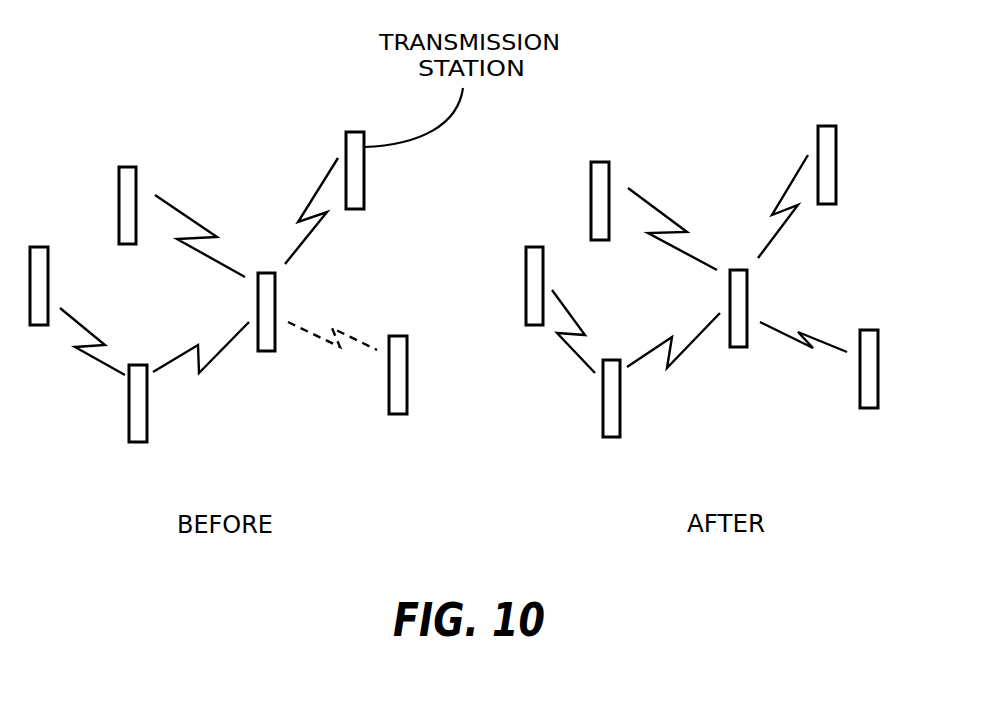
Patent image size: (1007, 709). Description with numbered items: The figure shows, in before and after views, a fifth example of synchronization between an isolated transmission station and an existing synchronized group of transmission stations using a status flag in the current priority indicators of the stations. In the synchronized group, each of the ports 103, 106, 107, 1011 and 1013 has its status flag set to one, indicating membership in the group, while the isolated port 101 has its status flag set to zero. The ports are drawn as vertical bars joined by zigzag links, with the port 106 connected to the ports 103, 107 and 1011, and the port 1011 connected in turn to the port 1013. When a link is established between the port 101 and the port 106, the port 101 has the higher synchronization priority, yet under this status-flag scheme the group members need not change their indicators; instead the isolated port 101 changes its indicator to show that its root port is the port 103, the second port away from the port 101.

The isolated port 101 is at (389, 398).
The root port 103 is at (136, 185).
The port 106 is at (276, 310).
The port 107 is at (346, 146).
The port 1011 is at (147, 417).
The port 1013 is at (120, 276).